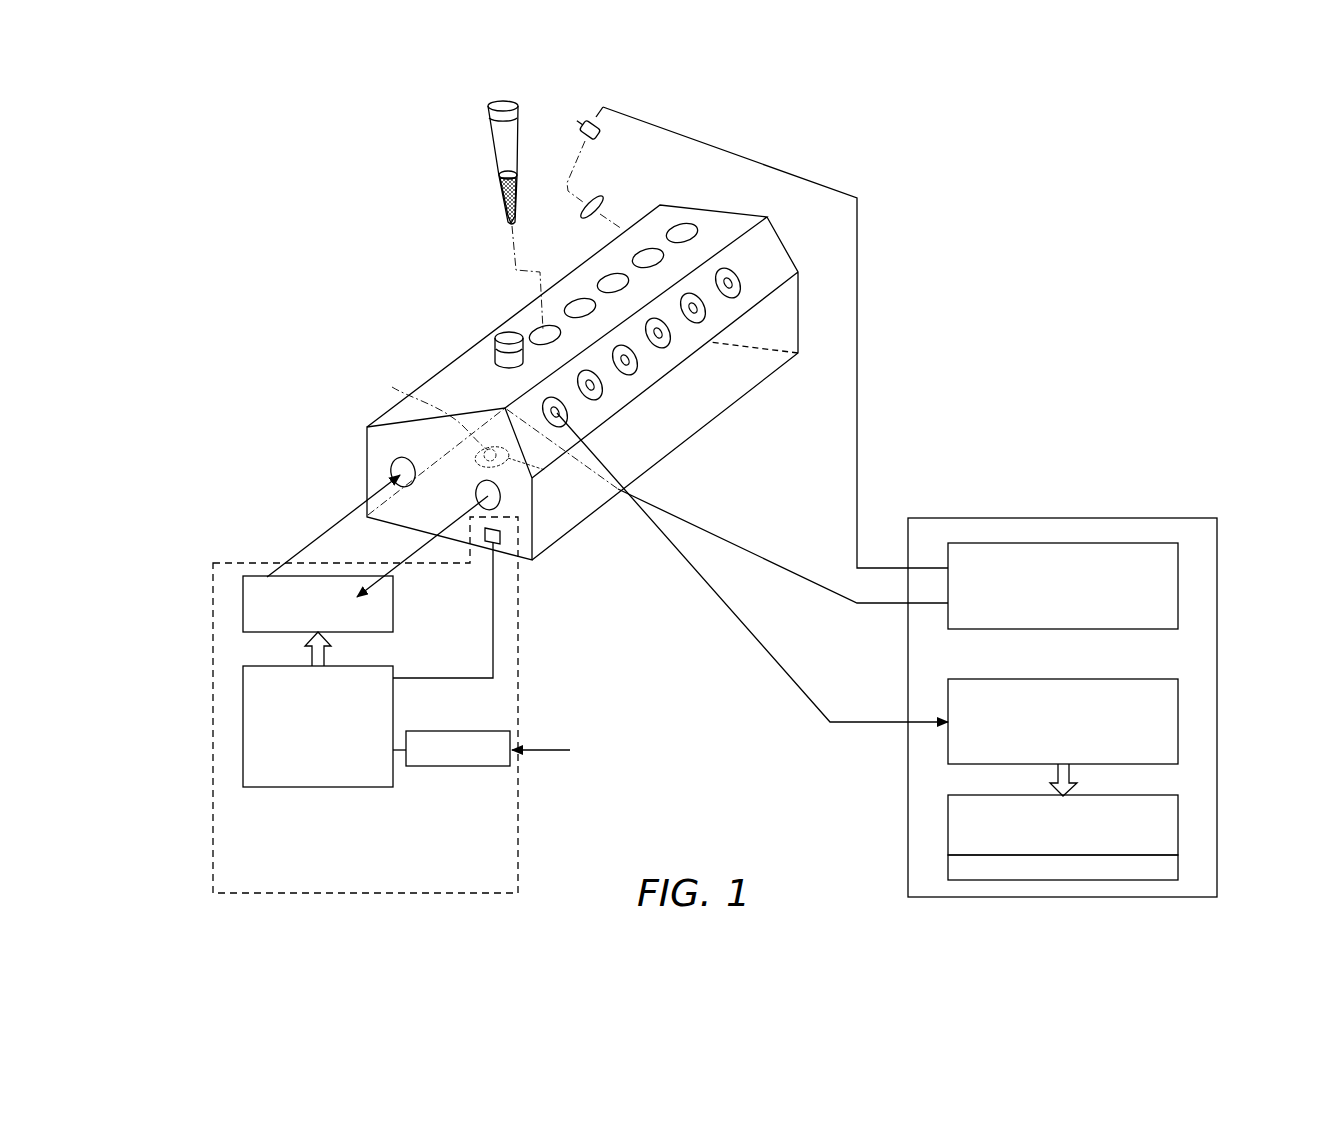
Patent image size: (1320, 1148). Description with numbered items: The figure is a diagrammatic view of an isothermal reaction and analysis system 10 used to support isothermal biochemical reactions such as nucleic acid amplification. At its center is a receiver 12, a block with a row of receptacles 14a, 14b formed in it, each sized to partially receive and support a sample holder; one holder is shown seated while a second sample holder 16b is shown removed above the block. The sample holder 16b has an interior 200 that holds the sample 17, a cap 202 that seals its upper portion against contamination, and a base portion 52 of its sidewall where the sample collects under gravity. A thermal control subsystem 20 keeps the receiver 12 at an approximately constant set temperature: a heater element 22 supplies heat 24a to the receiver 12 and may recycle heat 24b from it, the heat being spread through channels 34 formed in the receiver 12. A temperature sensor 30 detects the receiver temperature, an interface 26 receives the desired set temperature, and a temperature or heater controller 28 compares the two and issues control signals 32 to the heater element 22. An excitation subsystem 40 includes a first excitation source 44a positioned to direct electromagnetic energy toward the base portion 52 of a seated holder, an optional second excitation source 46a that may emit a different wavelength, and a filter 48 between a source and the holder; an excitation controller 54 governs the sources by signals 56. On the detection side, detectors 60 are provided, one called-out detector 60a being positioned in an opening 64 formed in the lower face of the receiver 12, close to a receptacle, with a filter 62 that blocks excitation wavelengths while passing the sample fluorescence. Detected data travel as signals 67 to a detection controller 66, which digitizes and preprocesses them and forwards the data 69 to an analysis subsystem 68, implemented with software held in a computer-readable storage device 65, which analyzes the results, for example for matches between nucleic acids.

The isothermal reaction and analysis system 10 is at (280, 242).
The receiver 12 is at (383, 407).
The receptacle 14a is at (495, 352).
The receptacle 14b is at (540, 332).
The sample holder 16b is at (495, 362).
The sample 17 is at (500, 177).
The thermal control subsystem 20 is at (212, 586).
The heater element 22 is at (243, 622).
The heat 24a is at (330, 538).
The recycled heat 24b is at (425, 556).
The interface 26 is at (498, 731).
The temperature or heater controller 28 is at (243, 724).
The temperature sensor 30 is at (500, 537).
The control signals 32 is at (312, 655).
The channels 34 is at (392, 470).
The excitation subsystem 40 is at (938, 502).
The excitation source 44a is at (560, 411).
The second excitation source 46a is at (586, 122).
The filter 48 is at (601, 199).
The base portion 52 is at (503, 190).
The excitation controller 54 is at (1178, 583).
The signals 56 is at (705, 507).
The detectors 60 is at (795, 727).
The detector 60a is at (488, 454).
The filter 62 is at (478, 456).
The opening 64 is at (392, 387).
The computer-readable storage device 65 is at (1178, 865).
The detection controller 66 is at (1178, 718).
The signals 67 is at (733, 612).
The analysis subsystem 68 is at (1178, 820).
The data 69 is at (1070, 773).
The interior 200 is at (490, 205).
The cap 202 is at (497, 116).